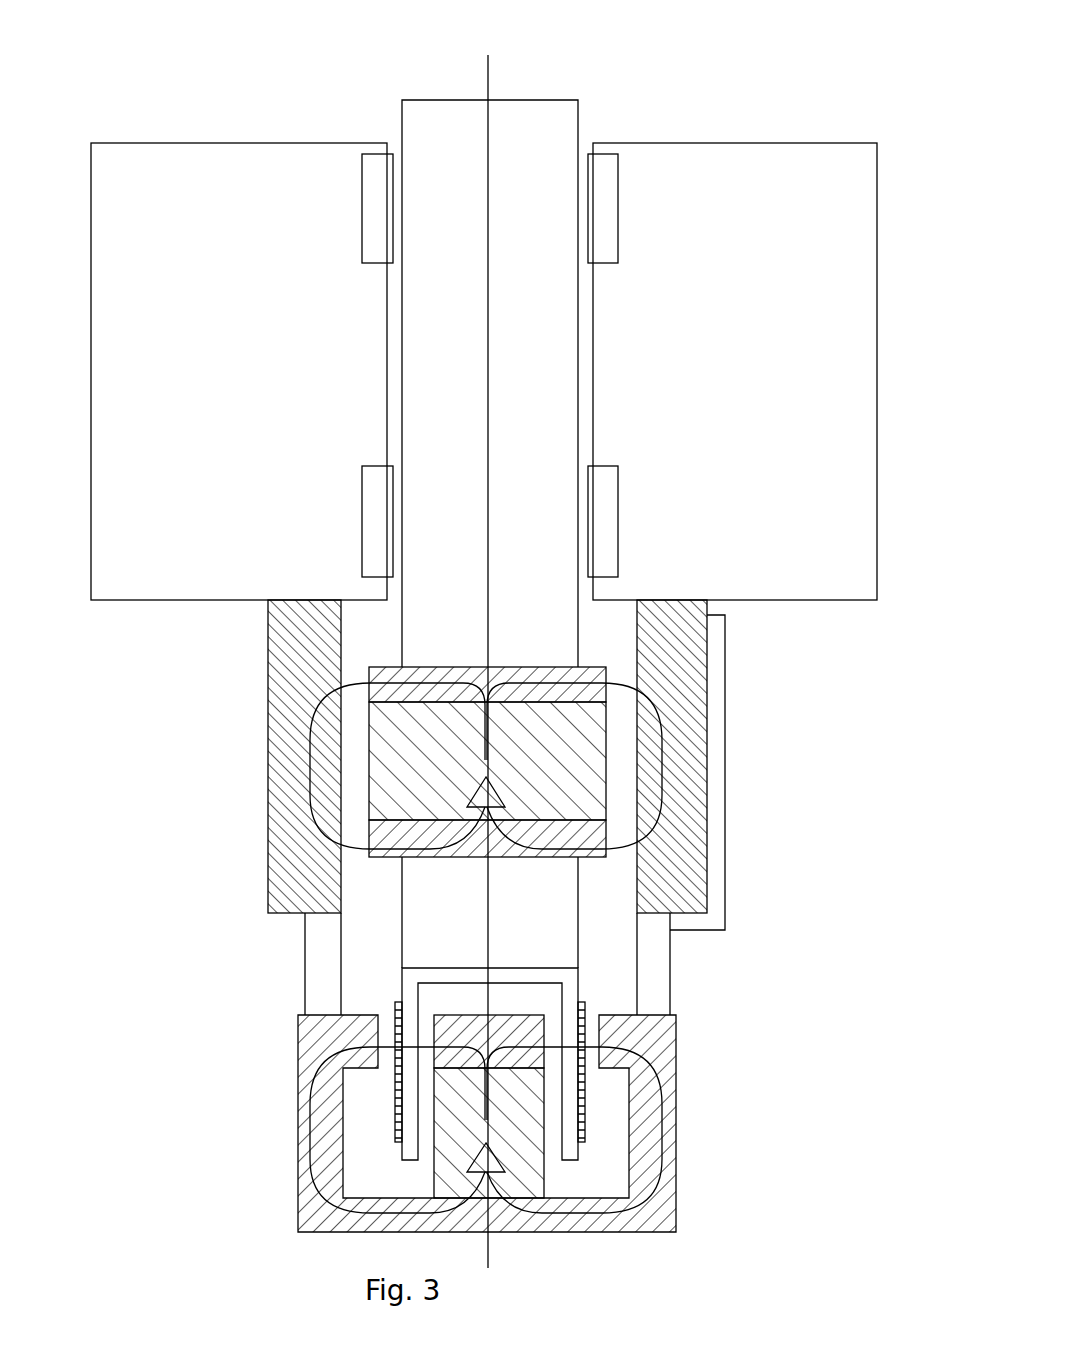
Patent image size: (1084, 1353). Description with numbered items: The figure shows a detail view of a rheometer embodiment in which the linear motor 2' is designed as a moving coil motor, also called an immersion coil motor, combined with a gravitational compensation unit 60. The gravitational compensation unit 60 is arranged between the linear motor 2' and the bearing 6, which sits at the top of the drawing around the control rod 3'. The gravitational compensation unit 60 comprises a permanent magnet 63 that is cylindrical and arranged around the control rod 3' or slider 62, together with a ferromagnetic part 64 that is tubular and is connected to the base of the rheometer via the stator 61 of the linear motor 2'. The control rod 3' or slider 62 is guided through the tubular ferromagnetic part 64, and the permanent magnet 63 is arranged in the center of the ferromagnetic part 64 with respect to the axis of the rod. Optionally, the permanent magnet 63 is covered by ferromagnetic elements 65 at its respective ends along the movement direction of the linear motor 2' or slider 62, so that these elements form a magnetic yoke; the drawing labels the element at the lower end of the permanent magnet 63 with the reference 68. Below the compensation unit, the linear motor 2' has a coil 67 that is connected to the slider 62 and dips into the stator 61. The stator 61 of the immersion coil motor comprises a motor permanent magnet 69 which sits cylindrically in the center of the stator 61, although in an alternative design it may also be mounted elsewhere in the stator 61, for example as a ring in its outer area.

The control rod 3' is at (398, 484).
The bearing 6 is at (652, 120).
The gravitational compensation unit 60 is at (252, 783).
The stator 61 is at (663, 1208).
The slider 62 is at (500, 925).
The permanent magnet 63 is at (432, 752).
The ferromagnetic part 64 is at (683, 770).
The ferromagnetic elements 65 is at (545, 678).
The coil 67 is at (395, 1037).
The lower pole piece 68 is at (620, 848).
The motor permanent magnet 69 is at (517, 1136).
The linear motor 2' is at (379, 1130).